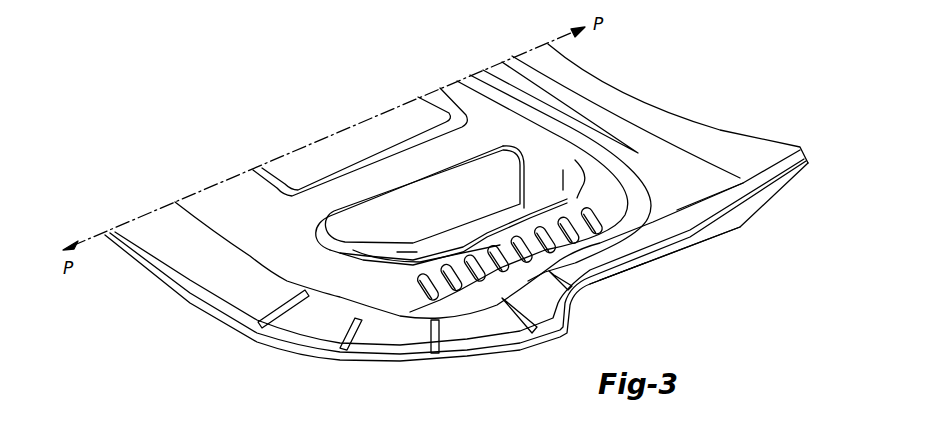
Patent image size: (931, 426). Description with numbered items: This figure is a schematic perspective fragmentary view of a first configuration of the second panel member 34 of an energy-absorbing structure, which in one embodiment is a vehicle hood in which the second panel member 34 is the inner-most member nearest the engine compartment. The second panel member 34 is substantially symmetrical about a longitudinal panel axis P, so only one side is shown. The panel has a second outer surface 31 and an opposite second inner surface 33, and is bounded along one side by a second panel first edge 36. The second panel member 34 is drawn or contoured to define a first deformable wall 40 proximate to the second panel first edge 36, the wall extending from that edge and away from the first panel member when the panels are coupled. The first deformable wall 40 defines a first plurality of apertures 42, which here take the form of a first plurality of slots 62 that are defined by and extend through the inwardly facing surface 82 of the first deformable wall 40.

The second panel member 34 is at (720, 124).
The second outer surface 31 is at (676, 190).
The second inner surface 33 is at (717, 232).
The second panel first edge 36 is at (647, 265).
The first deformable wall 40 is at (614, 207).
The inwardly facing surface 82 is at (503, 246).
The first plurality of apertures 42 is at (582, 203).
The first plurality of slots 62 is at (536, 205).